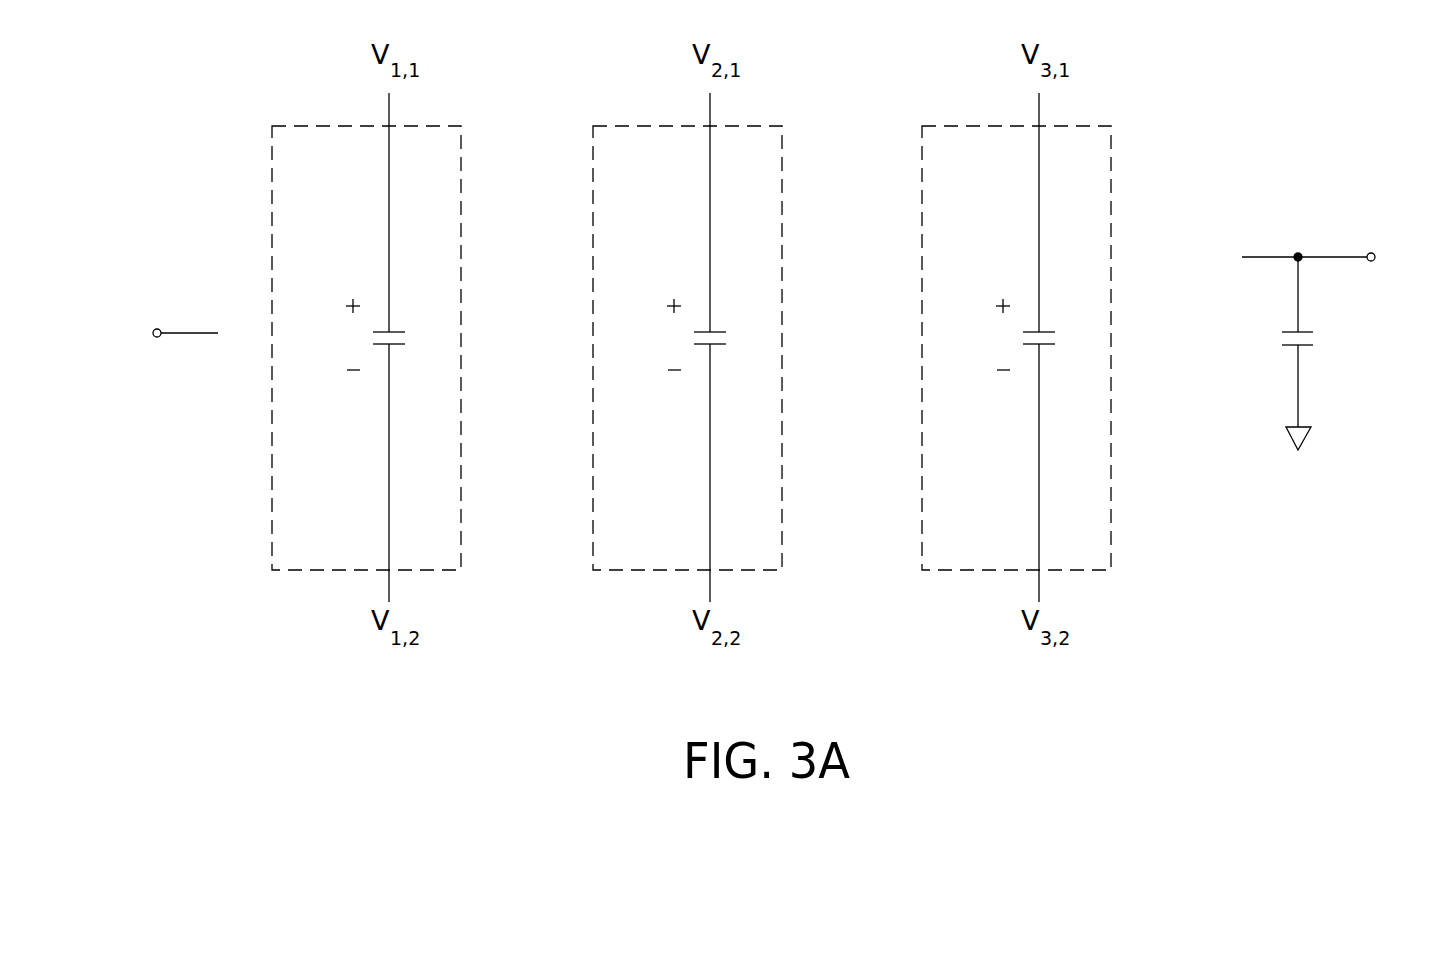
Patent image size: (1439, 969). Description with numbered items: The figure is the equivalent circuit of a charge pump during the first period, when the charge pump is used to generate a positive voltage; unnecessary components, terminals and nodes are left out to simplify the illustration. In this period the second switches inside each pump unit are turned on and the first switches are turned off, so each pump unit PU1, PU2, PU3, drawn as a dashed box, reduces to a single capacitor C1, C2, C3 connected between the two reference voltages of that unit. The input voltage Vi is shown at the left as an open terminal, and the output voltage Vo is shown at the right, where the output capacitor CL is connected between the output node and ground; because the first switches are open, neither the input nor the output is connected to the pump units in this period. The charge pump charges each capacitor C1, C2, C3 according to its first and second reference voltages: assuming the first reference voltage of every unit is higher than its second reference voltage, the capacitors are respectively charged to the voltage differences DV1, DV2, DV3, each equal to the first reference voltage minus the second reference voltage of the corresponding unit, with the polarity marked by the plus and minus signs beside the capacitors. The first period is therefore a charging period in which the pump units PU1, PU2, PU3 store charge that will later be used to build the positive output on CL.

The input voltage Vi is at (164, 334).
The output voltage Vo is at (1327, 264).
The pump unit PU1 is at (322, 572).
The pump unit PU2 is at (643, 572).
The pump unit PU3 is at (972, 572).
The capacitor C1 is at (410, 347).
The capacitor C2 is at (731, 347).
The capacitor C3 is at (1060, 347).
The output capacitor CL is at (1319, 353).
The voltage difference DV1 is at (342, 334).
The voltage difference DV2 is at (663, 334).
The voltage difference DV3 is at (992, 334).